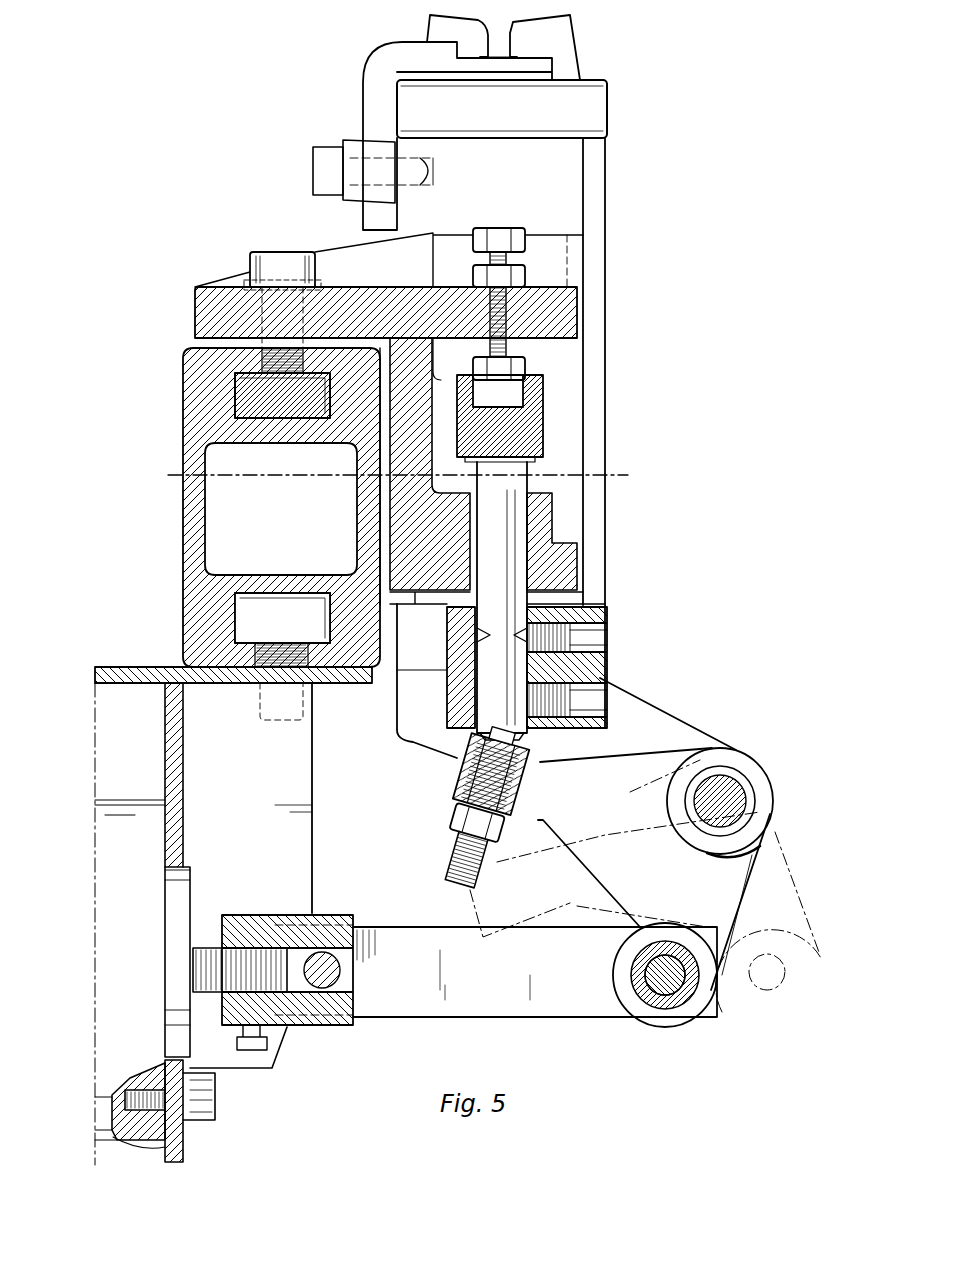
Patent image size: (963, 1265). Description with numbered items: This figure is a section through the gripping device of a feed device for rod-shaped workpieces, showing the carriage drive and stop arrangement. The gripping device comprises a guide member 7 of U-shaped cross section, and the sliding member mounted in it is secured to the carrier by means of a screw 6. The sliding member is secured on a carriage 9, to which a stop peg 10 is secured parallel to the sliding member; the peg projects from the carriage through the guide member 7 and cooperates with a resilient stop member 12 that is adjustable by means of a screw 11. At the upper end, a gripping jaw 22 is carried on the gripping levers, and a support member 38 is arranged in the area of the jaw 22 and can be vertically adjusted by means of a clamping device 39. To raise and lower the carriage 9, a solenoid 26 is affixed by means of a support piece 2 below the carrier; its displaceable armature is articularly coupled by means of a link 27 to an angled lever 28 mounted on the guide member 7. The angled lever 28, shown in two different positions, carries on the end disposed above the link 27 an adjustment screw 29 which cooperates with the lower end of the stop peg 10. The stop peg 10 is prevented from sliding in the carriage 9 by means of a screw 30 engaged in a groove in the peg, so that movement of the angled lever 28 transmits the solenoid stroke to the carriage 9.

The support piece 2 is at (178, 722).
The screw 6 is at (278, 252).
The guide member 7 is at (568, 322).
The carriage 9 is at (598, 372).
The stop peg 10 is at (530, 558).
The screw 11 is at (510, 340).
The resilient stop member 12 is at (547, 437).
The gripping jaw 22 is at (527, 33).
The solenoid 26 is at (183, 1145).
The link 27 is at (392, 998).
The angled lever 28 is at (747, 866).
The adjustment screw 29 is at (457, 840).
The screw 30 is at (583, 640).
The support member 38 is at (377, 108).
The clamping device 39 is at (350, 195).